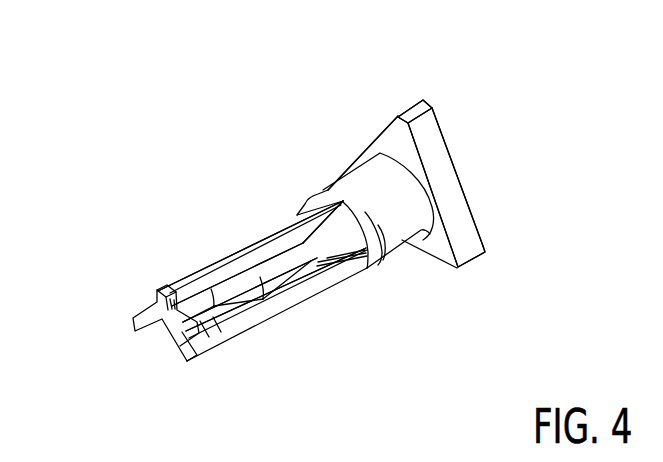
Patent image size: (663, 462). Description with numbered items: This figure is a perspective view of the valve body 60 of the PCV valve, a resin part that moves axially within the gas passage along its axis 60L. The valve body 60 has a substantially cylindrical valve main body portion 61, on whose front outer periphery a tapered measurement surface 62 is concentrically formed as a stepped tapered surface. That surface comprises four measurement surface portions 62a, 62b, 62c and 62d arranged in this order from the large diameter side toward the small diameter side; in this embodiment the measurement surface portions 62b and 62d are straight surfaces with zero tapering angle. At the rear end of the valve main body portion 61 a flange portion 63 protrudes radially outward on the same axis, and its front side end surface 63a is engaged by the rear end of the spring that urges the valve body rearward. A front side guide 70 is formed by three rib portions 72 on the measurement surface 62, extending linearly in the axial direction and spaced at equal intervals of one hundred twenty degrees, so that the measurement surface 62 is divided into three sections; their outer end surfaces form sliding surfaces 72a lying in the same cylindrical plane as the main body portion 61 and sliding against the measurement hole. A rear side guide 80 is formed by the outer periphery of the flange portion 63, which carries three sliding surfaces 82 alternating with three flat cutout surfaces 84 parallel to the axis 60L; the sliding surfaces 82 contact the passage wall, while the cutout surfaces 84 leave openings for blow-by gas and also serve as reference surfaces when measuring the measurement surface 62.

The valve body 60 is at (179, 103).
The axis of the valve body 60L is at (97, 368).
The valve main body portion 61 is at (379, 213).
The measurement surface 62 is at (244, 311).
The measurement surface portion 62a is at (346, 275).
The measurement surface portion 62b is at (315, 302).
The measurement surface portion 62c is at (238, 357).
The measurement surface portion 62d is at (165, 357).
The flange portion 63 is at (363, 134).
The front side end surface of the flange portion 63a is at (358, 177).
The front side guide 70 is at (255, 275).
The rib portions 72 is at (212, 308).
The sliding surfaces 72a is at (214, 311).
The rear side guide 80 is at (456, 175).
The sliding surfaces 82 is at (460, 177).
The cutout surfaces 84 is at (461, 219).